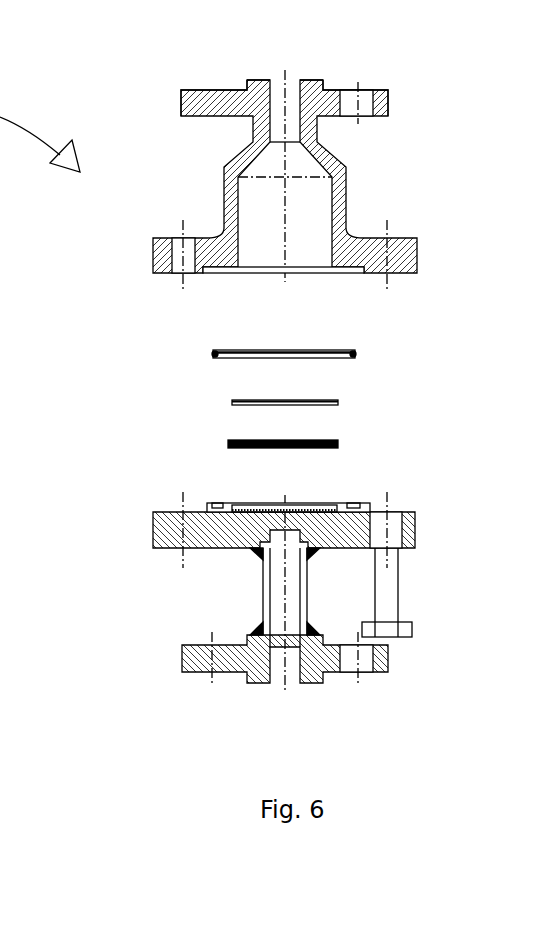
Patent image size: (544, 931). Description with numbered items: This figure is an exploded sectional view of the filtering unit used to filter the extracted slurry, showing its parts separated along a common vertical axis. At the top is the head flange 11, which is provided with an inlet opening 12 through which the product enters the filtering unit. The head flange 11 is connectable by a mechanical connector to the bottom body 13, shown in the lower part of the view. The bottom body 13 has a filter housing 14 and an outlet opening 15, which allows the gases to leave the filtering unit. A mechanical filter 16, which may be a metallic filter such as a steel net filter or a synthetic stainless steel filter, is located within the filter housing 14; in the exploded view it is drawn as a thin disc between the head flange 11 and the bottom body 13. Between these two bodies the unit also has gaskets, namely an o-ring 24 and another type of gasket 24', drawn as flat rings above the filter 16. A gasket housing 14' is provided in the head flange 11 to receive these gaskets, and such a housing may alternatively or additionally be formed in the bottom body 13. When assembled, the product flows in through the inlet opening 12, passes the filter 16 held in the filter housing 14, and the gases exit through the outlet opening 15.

The head flange 11 is at (335, 167).
The inlet opening 12 is at (290, 93).
The bottom body 13 is at (347, 523).
The filter housing 14 is at (230, 575).
The gasket housing 14' is at (300, 297).
The outlet opening 15 is at (290, 673).
The mechanical filter 16 is at (333, 445).
The o-ring 24 is at (214, 345).
The gasket 24' is at (210, 397).